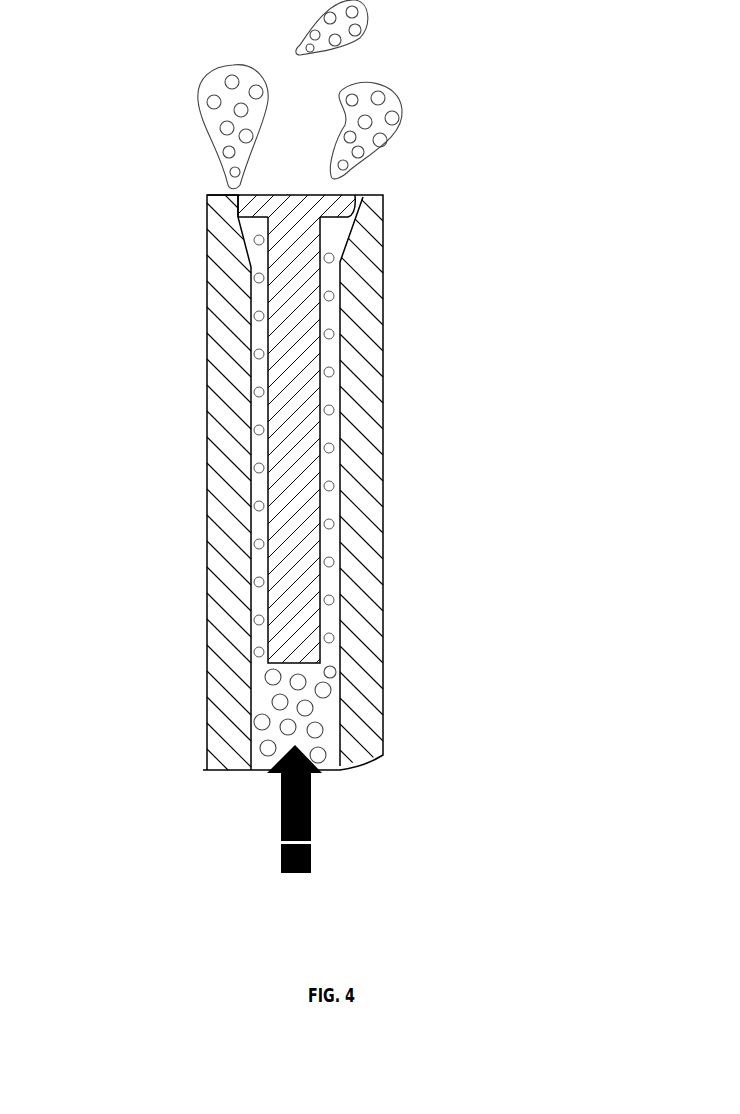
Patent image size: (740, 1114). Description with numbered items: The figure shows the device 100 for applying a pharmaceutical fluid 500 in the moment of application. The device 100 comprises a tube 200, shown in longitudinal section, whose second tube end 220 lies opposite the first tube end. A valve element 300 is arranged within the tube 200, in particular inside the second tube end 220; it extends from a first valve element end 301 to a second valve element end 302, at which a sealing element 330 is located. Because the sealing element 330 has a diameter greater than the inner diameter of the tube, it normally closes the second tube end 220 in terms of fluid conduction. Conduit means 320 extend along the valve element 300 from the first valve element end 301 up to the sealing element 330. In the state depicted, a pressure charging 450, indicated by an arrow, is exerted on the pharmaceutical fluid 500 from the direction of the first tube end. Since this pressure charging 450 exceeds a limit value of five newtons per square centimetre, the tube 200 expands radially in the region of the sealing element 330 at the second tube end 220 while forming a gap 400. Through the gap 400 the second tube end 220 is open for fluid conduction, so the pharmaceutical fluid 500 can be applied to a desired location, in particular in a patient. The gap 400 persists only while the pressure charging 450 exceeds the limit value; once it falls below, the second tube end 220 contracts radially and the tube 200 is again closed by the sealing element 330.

The device 100 is at (347, 438).
The tube 200 is at (205, 608).
The second tube end 220 is at (190, 295).
The valve element 300 is at (385, 429).
The first valve element end 301 is at (305, 630).
The second valve element end 302 is at (305, 245).
The conduit means 320 is at (263, 442).
The sealing element 330 is at (317, 202).
The gap 400 is at (232, 210).
The pressure charging 450 is at (310, 825).
The pharmaceutical fluid 500 is at (242, 118).